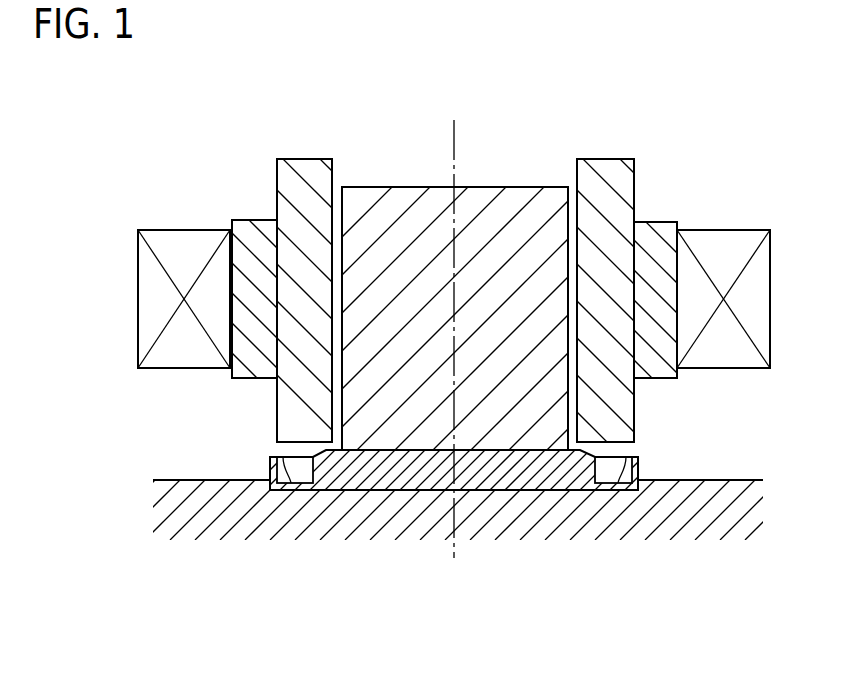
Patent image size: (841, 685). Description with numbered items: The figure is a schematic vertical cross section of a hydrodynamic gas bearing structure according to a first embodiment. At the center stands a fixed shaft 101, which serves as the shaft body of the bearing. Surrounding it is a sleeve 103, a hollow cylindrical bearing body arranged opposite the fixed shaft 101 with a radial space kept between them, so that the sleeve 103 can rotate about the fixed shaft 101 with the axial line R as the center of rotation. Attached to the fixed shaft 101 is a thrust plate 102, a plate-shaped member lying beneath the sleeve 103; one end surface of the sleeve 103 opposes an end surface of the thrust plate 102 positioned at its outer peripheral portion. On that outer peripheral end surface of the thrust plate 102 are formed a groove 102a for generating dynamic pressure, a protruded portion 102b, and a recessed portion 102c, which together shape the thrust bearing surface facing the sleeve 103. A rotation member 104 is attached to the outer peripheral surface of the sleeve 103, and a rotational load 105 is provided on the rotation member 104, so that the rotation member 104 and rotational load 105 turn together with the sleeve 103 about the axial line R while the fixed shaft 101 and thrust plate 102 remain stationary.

The axial line R is at (456, 148).
The fixed shaft 101 is at (522, 200).
The thrust plate 102 is at (507, 467).
The groove 102a is at (281, 458).
The protruded portion 102b is at (340, 455).
The recessed portion 102c is at (615, 458).
The sleeve 103 is at (313, 170).
The rotation member 104 is at (248, 233).
The rotational load 105 is at (181, 253).